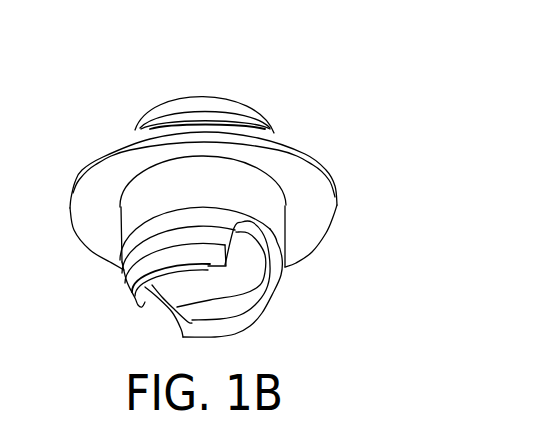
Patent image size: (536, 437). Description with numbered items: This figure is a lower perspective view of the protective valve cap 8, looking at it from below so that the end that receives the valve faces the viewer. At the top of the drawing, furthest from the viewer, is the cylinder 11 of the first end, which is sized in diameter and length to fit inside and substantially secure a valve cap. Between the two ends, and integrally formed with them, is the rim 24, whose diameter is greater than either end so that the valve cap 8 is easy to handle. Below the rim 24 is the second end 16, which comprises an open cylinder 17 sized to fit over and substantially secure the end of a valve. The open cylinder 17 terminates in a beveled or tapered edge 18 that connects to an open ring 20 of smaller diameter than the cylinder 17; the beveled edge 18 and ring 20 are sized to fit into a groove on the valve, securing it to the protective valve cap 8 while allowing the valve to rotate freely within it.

The protective valve cap 8 is at (128, 60).
The cylinder 11 is at (266, 126).
The rim 24 is at (98, 153).
The open cylinder 17 is at (147, 203).
The beveled edge 18 is at (130, 273).
The open ring 20 is at (143, 312).
The second end 16 is at (277, 311).